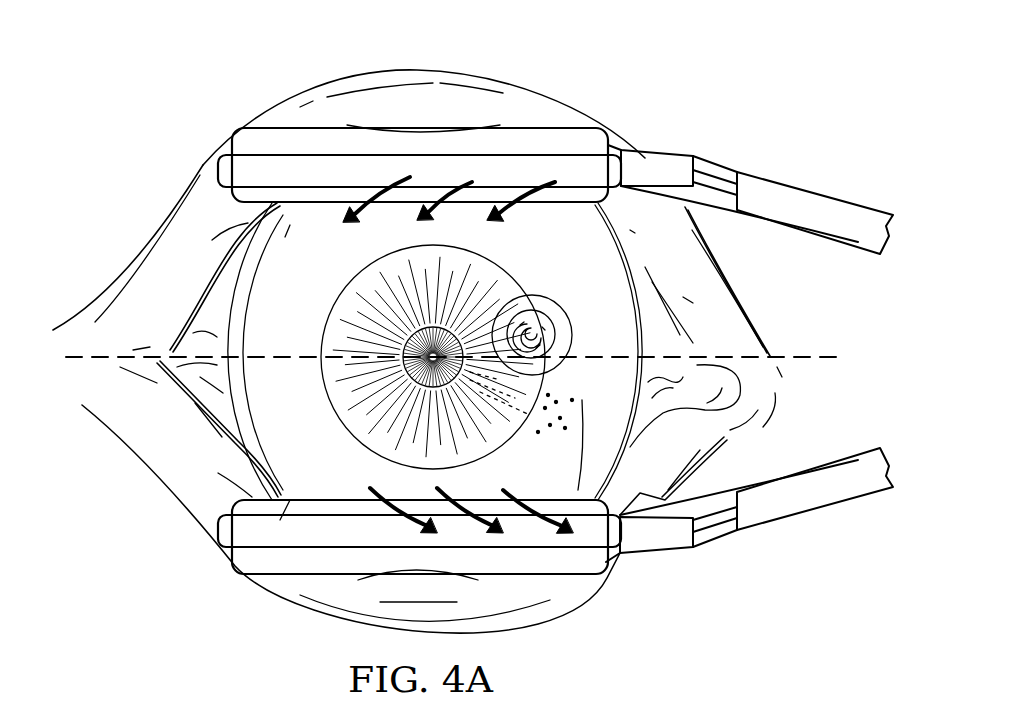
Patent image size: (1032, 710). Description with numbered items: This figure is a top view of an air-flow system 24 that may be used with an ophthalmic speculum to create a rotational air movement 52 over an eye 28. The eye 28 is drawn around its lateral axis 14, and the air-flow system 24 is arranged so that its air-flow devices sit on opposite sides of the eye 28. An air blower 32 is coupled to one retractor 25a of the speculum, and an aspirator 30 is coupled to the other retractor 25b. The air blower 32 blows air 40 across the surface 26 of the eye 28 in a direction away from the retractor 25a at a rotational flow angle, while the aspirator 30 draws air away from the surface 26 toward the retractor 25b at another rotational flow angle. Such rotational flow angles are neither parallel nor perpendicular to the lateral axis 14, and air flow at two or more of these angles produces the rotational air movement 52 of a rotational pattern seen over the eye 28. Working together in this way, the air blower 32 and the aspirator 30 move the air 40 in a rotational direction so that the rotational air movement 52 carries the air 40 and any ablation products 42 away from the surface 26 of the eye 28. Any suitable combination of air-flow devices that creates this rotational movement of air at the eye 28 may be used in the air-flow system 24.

The lateral axis 14 is at (813, 355).
The air-flow system 24 is at (722, 110).
The retractor 25a is at (567, 128).
The retractor 25b is at (573, 577).
The surface of eye 26 is at (310, 441).
The eye 28 is at (237, 442).
The aspirator 30 is at (218, 531).
The air blower 32 is at (218, 171).
The air 40 is at (580, 177).
The ablation products 42 is at (568, 420).
The rotational air movement 52 is at (548, 288).